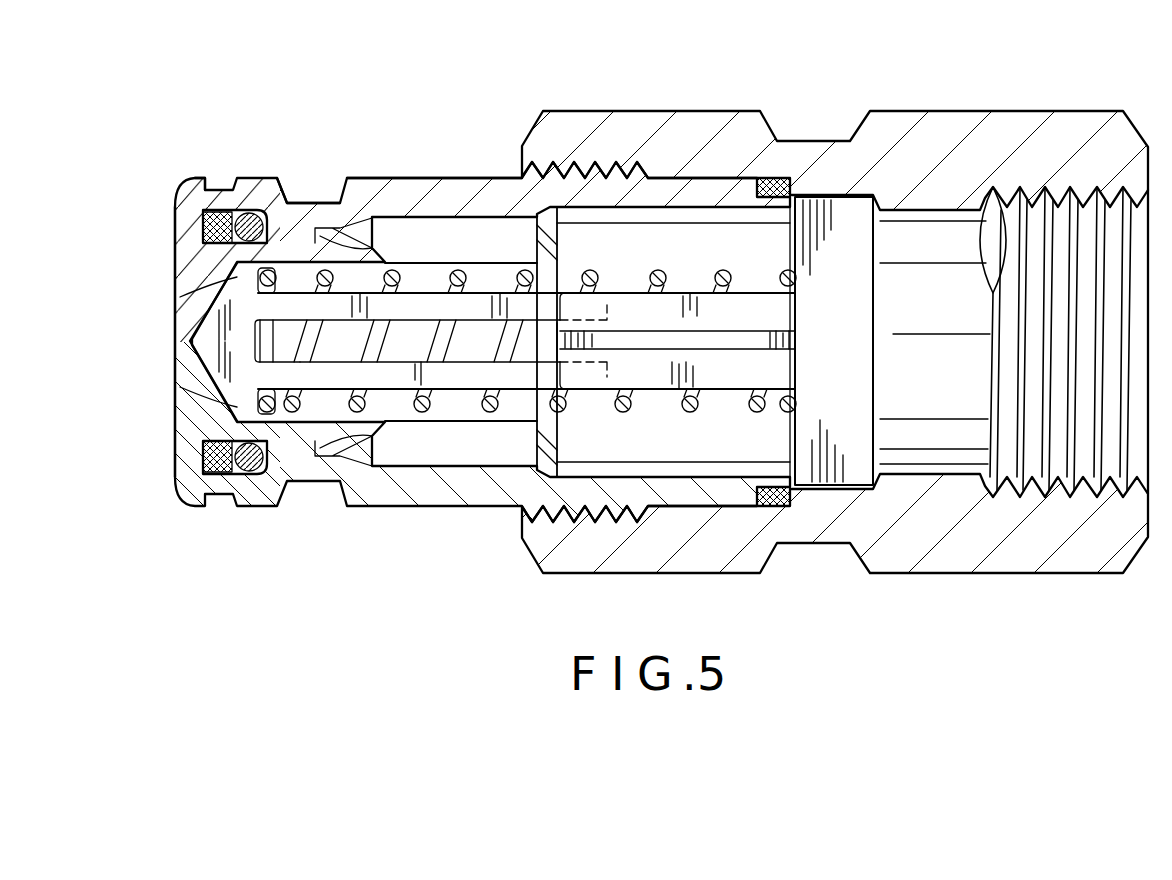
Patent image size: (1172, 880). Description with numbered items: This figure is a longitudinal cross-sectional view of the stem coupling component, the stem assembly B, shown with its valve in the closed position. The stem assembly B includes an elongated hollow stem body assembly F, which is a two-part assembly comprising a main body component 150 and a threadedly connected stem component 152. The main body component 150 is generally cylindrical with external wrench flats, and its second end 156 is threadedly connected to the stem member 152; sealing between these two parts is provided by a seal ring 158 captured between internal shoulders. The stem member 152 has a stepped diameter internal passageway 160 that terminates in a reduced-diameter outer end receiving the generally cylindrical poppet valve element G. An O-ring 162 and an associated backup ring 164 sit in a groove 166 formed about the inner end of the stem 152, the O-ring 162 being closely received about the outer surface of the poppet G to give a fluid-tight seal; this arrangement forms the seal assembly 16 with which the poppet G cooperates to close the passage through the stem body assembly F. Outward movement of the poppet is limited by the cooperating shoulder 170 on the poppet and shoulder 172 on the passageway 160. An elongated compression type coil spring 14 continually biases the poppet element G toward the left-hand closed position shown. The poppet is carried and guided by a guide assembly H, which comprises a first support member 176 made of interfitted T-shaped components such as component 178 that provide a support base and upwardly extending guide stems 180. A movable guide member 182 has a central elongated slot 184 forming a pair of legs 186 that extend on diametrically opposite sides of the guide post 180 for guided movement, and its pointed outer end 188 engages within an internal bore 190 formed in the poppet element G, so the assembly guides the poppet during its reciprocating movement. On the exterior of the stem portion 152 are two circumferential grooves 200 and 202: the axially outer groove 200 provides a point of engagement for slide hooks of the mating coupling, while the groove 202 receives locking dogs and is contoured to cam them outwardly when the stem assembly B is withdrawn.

The compression type coil spring 14 is at (459, 270).
The seal assembly 16 is at (165, 493).
The main body component 150 is at (693, 560).
The stem component 152 is at (351, 499).
The second end 156 is at (533, 527).
The seal ring 158 is at (773, 503).
The stepped diameter internal passageway 160 is at (379, 458).
The O-ring 162 is at (237, 463).
The backup ring 164 is at (204, 460).
The groove 166 is at (247, 220).
The shoulder 170 is at (383, 105).
The shoulder 172 is at (376, 236).
The first support member 176 is at (847, 337).
The T-shaped component 178 is at (843, 243).
The guide stem 180 is at (620, 303).
The movable guide member 182 is at (330, 373).
The central elongated slot 184 is at (449, 355).
The legs 186 is at (533, 370).
The pointed outer end 188 is at (186, 341).
The internal bore 190 is at (183, 294).
The axially outer groove 200 is at (216, 188).
The groove 202 is at (288, 203).
The stem assembly B is at (500, 136).
The stem body assembly F is at (626, 98).
The poppet valve element G is at (168, 374).
The guide assembly H is at (669, 404).